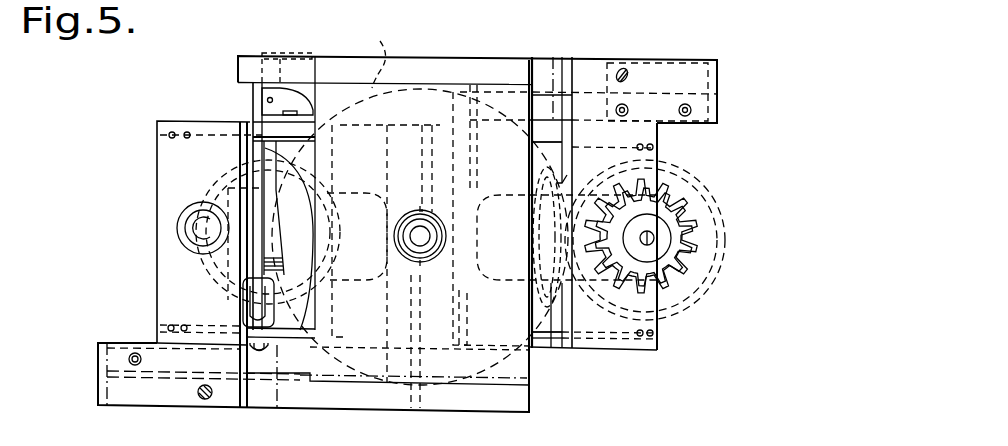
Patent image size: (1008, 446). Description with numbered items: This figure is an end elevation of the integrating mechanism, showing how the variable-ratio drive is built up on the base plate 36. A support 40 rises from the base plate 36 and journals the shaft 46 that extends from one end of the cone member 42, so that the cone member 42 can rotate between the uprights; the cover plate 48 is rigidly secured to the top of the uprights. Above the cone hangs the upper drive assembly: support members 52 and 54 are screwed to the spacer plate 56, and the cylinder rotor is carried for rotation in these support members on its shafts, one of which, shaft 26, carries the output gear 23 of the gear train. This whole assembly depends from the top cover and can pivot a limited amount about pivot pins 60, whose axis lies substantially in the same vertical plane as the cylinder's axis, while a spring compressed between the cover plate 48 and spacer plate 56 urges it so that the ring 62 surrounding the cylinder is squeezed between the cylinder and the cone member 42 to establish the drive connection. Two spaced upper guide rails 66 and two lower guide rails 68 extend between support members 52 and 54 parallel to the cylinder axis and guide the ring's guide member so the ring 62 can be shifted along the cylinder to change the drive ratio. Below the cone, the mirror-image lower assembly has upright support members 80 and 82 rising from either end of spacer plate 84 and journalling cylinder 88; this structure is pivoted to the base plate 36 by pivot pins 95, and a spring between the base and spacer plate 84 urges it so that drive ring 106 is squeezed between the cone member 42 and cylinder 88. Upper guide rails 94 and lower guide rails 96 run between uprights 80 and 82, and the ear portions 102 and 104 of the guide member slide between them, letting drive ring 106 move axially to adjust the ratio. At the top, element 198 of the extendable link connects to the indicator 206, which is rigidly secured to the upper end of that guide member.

The output gear 23 is at (690, 245).
The shaft 26 is at (650, 236).
The base plate 36 is at (514, 398).
The support 40 is at (514, 367).
The cone member 42 is at (419, 88).
The shaft 46 is at (414, 237).
The cover plate 48 is at (240, 59).
The support member 52 is at (658, 169).
The support member 54 is at (532, 137).
The spacer plate 56 is at (553, 94).
The pivot pins 60 is at (620, 68).
The ring 62 is at (660, 309).
The upper guide rails 66 is at (654, 148).
The lower guide rails 68 is at (654, 334).
The upright support member 80 is at (492, 219).
The upright support member 82 is at (160, 282).
The spacer plate 84 is at (292, 370).
The cylinder 88 is at (270, 211).
The upper guide rails 94 is at (166, 137).
The pivot pins 95 is at (200, 396).
The lower guide rails 96 is at (172, 328).
The ear portion 102 is at (256, 108).
The ear portion 104 is at (258, 348).
The drive ring 106 is at (212, 174).
The element 198 is at (264, 92).
The indicator 206 is at (290, 54).